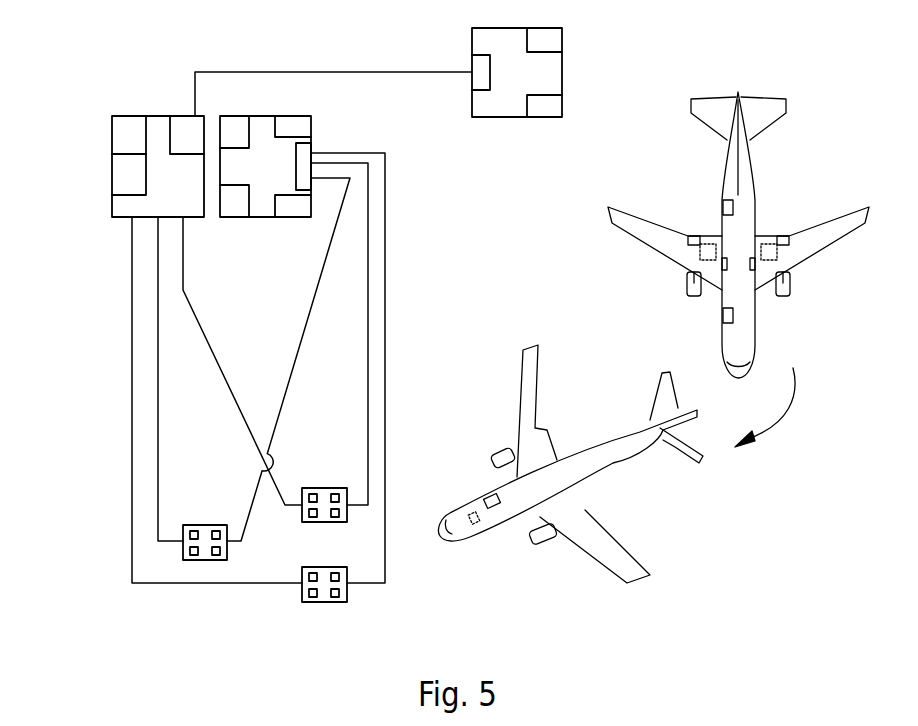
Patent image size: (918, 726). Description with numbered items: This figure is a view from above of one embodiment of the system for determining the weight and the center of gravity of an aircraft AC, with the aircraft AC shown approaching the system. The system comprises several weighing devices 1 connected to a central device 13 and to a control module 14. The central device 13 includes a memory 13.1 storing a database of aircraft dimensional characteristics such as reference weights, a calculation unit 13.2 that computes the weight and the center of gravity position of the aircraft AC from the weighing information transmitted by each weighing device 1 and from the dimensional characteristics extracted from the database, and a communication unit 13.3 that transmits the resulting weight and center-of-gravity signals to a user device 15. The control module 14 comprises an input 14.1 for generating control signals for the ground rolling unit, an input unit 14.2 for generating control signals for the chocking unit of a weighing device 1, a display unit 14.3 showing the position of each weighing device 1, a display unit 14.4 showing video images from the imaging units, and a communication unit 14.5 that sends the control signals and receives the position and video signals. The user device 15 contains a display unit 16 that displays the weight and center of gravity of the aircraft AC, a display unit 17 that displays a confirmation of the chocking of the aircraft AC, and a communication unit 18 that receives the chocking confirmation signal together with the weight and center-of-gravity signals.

The weighing device 1 is at (200, 525).
The central device 13 is at (148, 116).
The memory 13.1 is at (120, 134).
The calculation unit 13.2 is at (122, 175).
The communication unit 13.3 is at (192, 128).
The control module 14 is at (259, 116).
The input 14.1 is at (294, 124).
The input unit 14.2 is at (234, 123).
The display unit 14.3 is at (229, 210).
The display unit 14.4 is at (293, 210).
The communication unit 14.5 is at (305, 149).
The user device 15 is at (557, 78).
The display unit 16 is at (547, 107).
The display unit 17 is at (545, 42).
The communication unit 18 is at (480, 78).
The aircraft AC is at (780, 203).